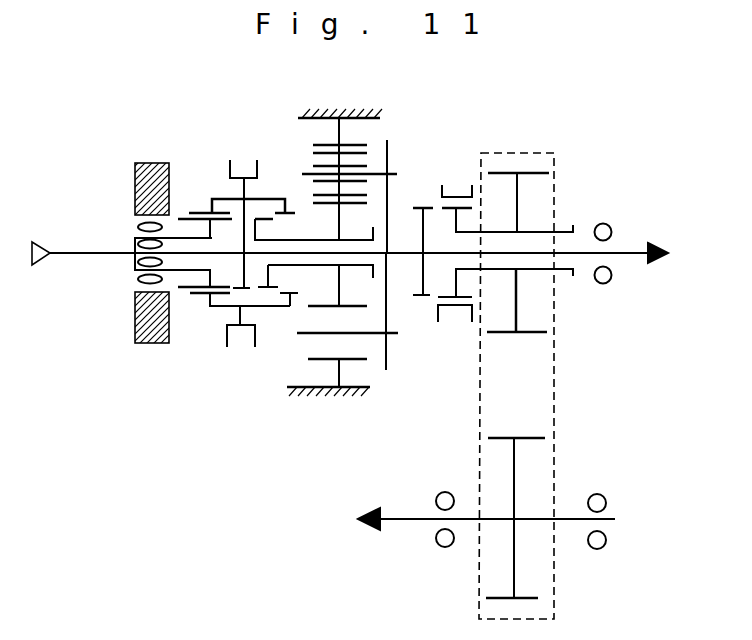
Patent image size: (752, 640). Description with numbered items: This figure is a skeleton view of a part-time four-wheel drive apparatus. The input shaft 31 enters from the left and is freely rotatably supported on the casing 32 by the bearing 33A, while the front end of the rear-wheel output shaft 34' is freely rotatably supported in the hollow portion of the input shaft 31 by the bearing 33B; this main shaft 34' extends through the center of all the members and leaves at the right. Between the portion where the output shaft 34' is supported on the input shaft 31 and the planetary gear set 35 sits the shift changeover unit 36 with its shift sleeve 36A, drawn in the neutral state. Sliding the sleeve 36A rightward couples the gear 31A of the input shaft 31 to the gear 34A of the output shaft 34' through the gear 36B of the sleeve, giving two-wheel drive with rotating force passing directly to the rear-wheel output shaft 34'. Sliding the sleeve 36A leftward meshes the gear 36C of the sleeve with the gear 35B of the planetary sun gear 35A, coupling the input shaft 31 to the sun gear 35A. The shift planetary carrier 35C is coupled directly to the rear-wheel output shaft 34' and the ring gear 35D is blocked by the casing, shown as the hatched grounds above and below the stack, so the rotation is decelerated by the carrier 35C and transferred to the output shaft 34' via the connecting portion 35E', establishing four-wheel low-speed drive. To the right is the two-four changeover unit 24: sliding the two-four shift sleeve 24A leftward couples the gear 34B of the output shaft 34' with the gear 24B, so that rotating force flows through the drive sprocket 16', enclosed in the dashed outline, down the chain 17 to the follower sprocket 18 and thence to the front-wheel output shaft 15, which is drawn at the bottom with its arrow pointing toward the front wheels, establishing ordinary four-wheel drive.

The input shaft 31 is at (70, 249).
The gear of the input shaft 31A is at (185, 213).
The casing 32 is at (139, 178).
The bearing 33A is at (140, 225).
The bearing 33B is at (137, 246).
The gear of the output shaft 34A is at (226, 248).
The gear of the output shaft 34B is at (418, 207).
The rear-wheel output shaft 34' is at (398, 311).
The planetary gear set 35 is at (393, 136).
The planetary sun gear 35A is at (339, 233).
The gear of planetary sun gear 35B is at (273, 216).
The shift planetary carrier 35C is at (310, 160).
The ring gear 35D is at (339, 133).
The connecting portion 35E' is at (360, 273).
The shift changeover unit 36 is at (213, 140).
The shift sleeve 36A is at (263, 196).
The gear of the sleeve 36B is at (199, 212).
The gear of the sleeve 36C is at (314, 229).
The 2-4 changeover unit 24 is at (447, 173).
The 2-4 shift sleeve 24A is at (442, 193).
The gear 24B is at (451, 211).
The drive sprocket 16' is at (520, 370).
The chain 17 is at (555, 409).
The follower sprocket 18 is at (537, 598).
The front-wheel output shaft 15 is at (408, 518).